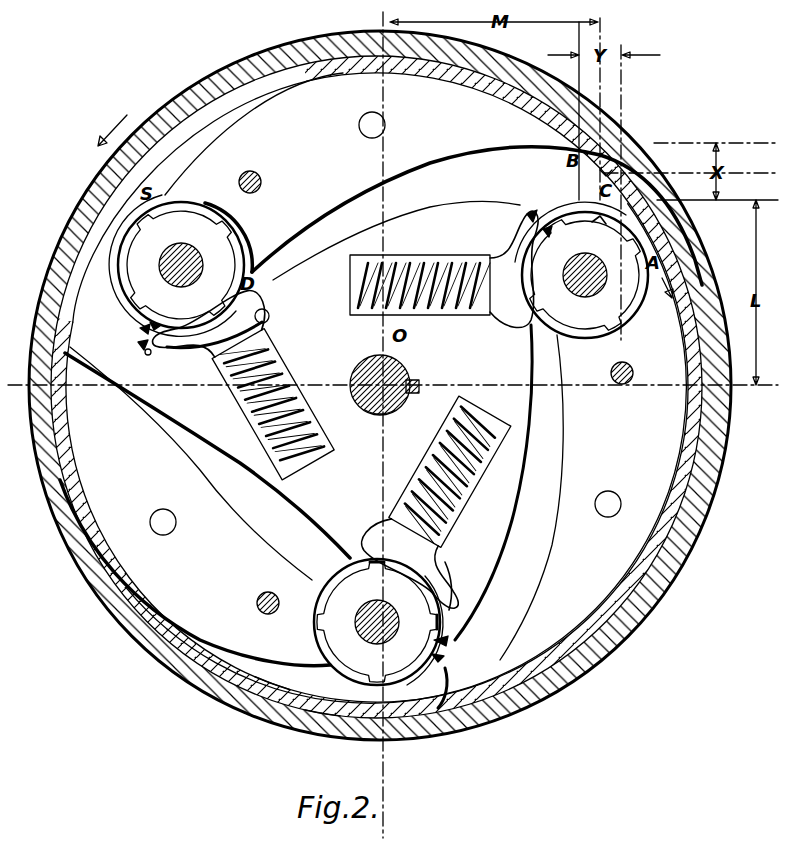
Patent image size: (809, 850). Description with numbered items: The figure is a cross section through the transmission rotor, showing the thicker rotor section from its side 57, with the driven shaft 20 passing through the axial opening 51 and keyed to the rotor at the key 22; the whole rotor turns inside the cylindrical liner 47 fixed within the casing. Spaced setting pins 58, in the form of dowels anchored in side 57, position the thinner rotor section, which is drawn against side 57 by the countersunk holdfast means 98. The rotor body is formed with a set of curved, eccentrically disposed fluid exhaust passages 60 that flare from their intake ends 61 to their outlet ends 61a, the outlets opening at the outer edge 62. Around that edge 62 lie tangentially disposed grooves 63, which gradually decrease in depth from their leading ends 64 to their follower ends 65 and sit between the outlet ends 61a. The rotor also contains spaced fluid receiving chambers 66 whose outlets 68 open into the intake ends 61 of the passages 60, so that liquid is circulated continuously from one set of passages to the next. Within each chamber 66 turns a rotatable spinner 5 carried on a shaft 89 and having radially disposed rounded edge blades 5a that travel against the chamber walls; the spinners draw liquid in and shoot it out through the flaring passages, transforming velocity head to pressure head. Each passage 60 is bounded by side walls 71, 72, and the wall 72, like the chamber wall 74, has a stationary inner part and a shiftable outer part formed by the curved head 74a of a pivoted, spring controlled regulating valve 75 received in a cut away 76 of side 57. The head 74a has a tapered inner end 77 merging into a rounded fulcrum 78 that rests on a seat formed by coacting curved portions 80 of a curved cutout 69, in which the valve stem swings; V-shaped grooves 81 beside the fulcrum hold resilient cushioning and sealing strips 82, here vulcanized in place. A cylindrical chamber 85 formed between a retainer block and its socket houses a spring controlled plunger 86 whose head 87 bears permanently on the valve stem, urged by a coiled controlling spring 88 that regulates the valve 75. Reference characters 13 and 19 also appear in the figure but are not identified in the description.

The spinner 5 is at (585, 326).
The blades 5a is at (608, 346).
The stop arc 13 is at (235, 228).
The spring arm 19 is at (447, 565).
The driven shaft 20 is at (362, 368).
The key 22 is at (420, 382).
The cylindrical liner 47 is at (210, 658).
The opening 51 is at (380, 418).
The side of rotor section 57 is at (690, 548).
The setting pins 58 is at (362, 122).
The fluid exhaust passages 60 is at (540, 545).
The intake ends 61 is at (530, 340).
The outlet ends 61a is at (469, 682).
The outer edge 62 is at (704, 285).
The grooves 63 is at (270, 675).
The leading ends 64 is at (322, 700).
The follower ends 65 is at (127, 598).
The fluid receiving chambers 66 is at (610, 220).
The outlets 68 is at (527, 322).
The cutouts 69 is at (265, 312).
The side wall of passage 71 is at (428, 160).
The side wall of passage 72 is at (424, 207).
The side wall of chamber 74 is at (186, 336).
The valve head 74a is at (606, 176).
The regulating valve 75 is at (596, 222).
The cut away 76 is at (147, 355).
The tapered inner end 77 is at (142, 346).
The fulcrum 78 is at (467, 598).
The curved portions 80 is at (425, 612).
The V-shaped grooves 81 is at (548, 228).
The cushioning and sealing strips 82 is at (532, 206).
The cylindrical chambers 85 is at (285, 372).
The plunger 86 is at (278, 345).
The plunger head 87 is at (268, 330).
The controlling spring 88 is at (288, 393).
The shaft 89 is at (340, 602).
The holdfast means 98 is at (250, 171).